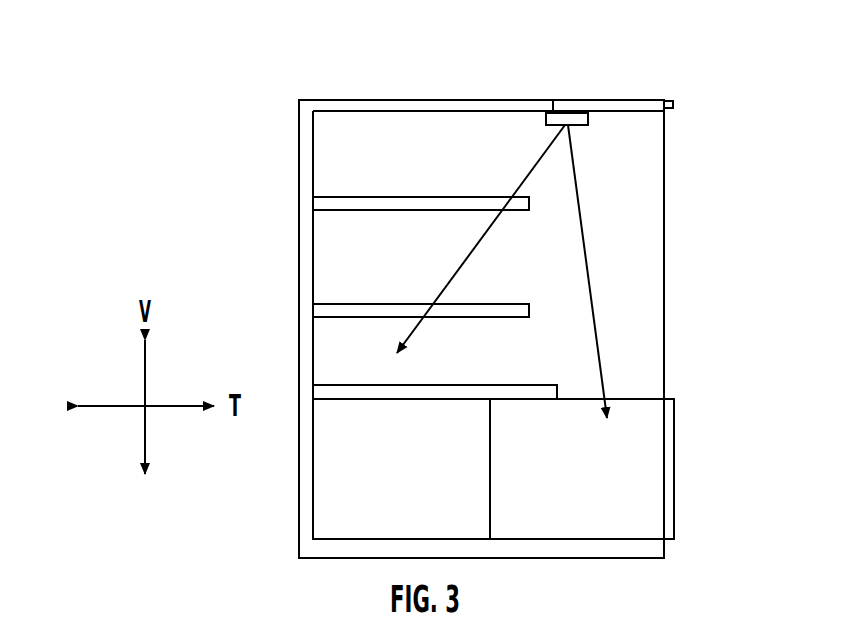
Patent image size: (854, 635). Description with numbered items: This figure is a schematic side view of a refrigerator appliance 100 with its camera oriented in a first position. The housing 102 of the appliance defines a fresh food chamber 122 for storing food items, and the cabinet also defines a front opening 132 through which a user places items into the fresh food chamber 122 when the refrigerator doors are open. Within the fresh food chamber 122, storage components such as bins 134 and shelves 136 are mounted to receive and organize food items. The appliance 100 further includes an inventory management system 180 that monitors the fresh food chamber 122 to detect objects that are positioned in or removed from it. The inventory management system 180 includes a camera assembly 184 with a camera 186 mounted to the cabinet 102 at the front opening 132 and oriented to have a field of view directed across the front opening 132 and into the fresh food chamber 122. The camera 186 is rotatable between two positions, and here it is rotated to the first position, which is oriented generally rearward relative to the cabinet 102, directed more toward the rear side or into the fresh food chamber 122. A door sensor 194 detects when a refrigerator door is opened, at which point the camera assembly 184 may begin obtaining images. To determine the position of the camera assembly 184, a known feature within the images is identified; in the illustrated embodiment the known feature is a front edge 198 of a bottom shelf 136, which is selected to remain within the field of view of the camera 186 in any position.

The refrigerator appliance 100 is at (250, 82).
The housing 102 is at (299, 498).
The fresh food chamber 122 is at (348, 273).
The front opening 132 is at (666, 312).
The bins 134 is at (568, 486).
The shelves 136 is at (493, 311).
The inventory management system 180 is at (581, 59).
The camera assembly 184 is at (552, 108).
The camera 186 is at (546, 116).
The door sensor 194 is at (673, 104).
The front edge 198 is at (564, 392).